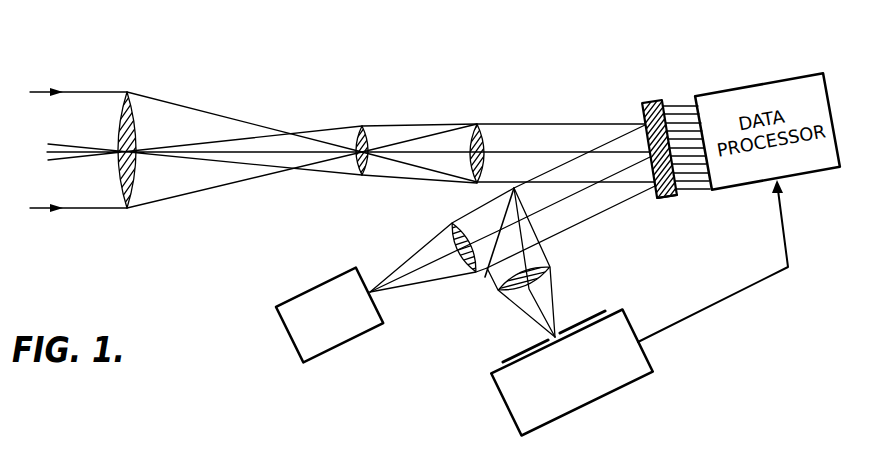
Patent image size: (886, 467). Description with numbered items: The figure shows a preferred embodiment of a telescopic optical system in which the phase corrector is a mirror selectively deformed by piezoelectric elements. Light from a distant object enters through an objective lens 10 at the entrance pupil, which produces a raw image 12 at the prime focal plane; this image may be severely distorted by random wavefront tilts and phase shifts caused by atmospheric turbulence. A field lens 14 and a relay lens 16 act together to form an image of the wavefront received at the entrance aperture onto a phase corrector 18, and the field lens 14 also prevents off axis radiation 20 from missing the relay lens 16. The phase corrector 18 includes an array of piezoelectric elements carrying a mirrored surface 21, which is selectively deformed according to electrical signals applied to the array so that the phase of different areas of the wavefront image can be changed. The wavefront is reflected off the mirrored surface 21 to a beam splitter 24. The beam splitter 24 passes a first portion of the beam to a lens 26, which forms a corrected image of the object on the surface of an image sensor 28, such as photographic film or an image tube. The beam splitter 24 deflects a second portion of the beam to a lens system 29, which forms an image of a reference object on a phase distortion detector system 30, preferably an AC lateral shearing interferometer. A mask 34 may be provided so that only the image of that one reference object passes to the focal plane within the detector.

The objective lens 10 is at (133, 110).
The raw image 12 is at (357, 148).
The field lens 14 is at (364, 140).
The relay lens 16 is at (481, 134).
The phase corrector 18 is at (656, 92).
The off axis radiation 20 is at (197, 158).
The mirrored surface 21 is at (656, 199).
The beam splitter 24 is at (506, 211).
The lens 26 is at (466, 273).
The image sensor 28 is at (287, 305).
The lens system 29 is at (551, 268).
The phase distortion detector system 30 is at (641, 345).
The mask 34 is at (503, 360).